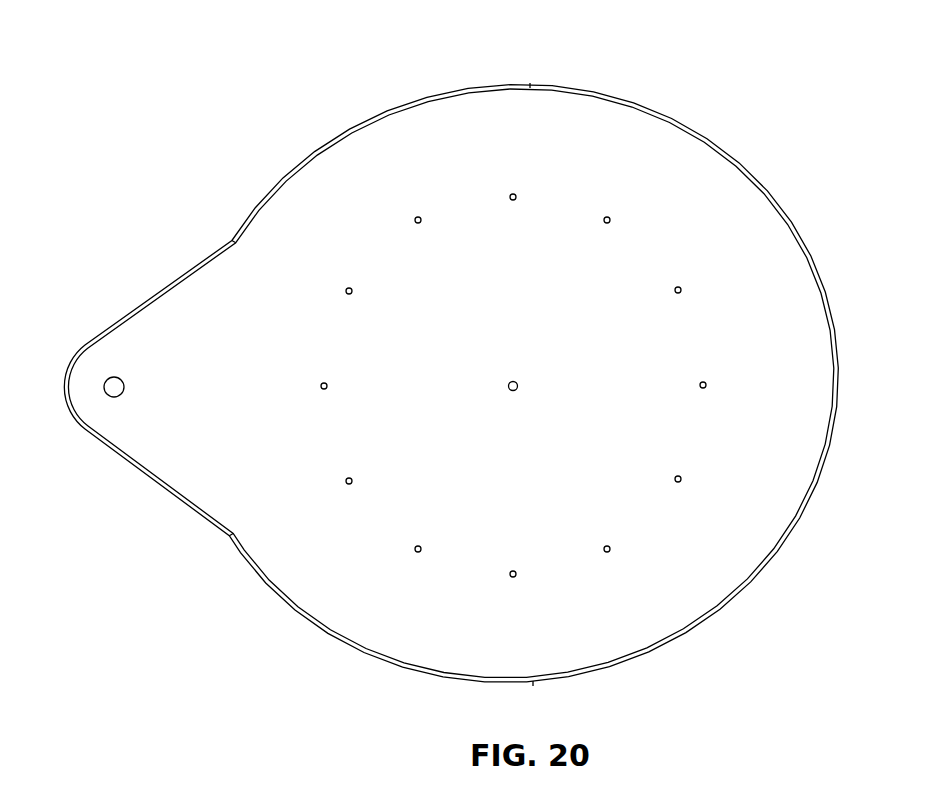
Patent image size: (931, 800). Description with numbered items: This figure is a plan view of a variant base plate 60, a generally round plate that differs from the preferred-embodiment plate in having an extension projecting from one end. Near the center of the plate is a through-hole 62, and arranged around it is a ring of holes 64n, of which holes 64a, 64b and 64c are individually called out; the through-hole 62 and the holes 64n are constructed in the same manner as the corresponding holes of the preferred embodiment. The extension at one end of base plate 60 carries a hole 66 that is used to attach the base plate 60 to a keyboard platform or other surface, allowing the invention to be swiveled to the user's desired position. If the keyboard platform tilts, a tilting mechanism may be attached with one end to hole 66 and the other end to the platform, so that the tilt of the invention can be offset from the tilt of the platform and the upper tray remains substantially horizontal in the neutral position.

The base plate 60 is at (782, 205).
The through-hole 62 is at (517, 389).
The hole 64a is at (511, 194).
The hole 64b is at (416, 218).
The hole 64c is at (347, 289).
The holes 64n is at (322, 384).
The hole 66 is at (112, 397).